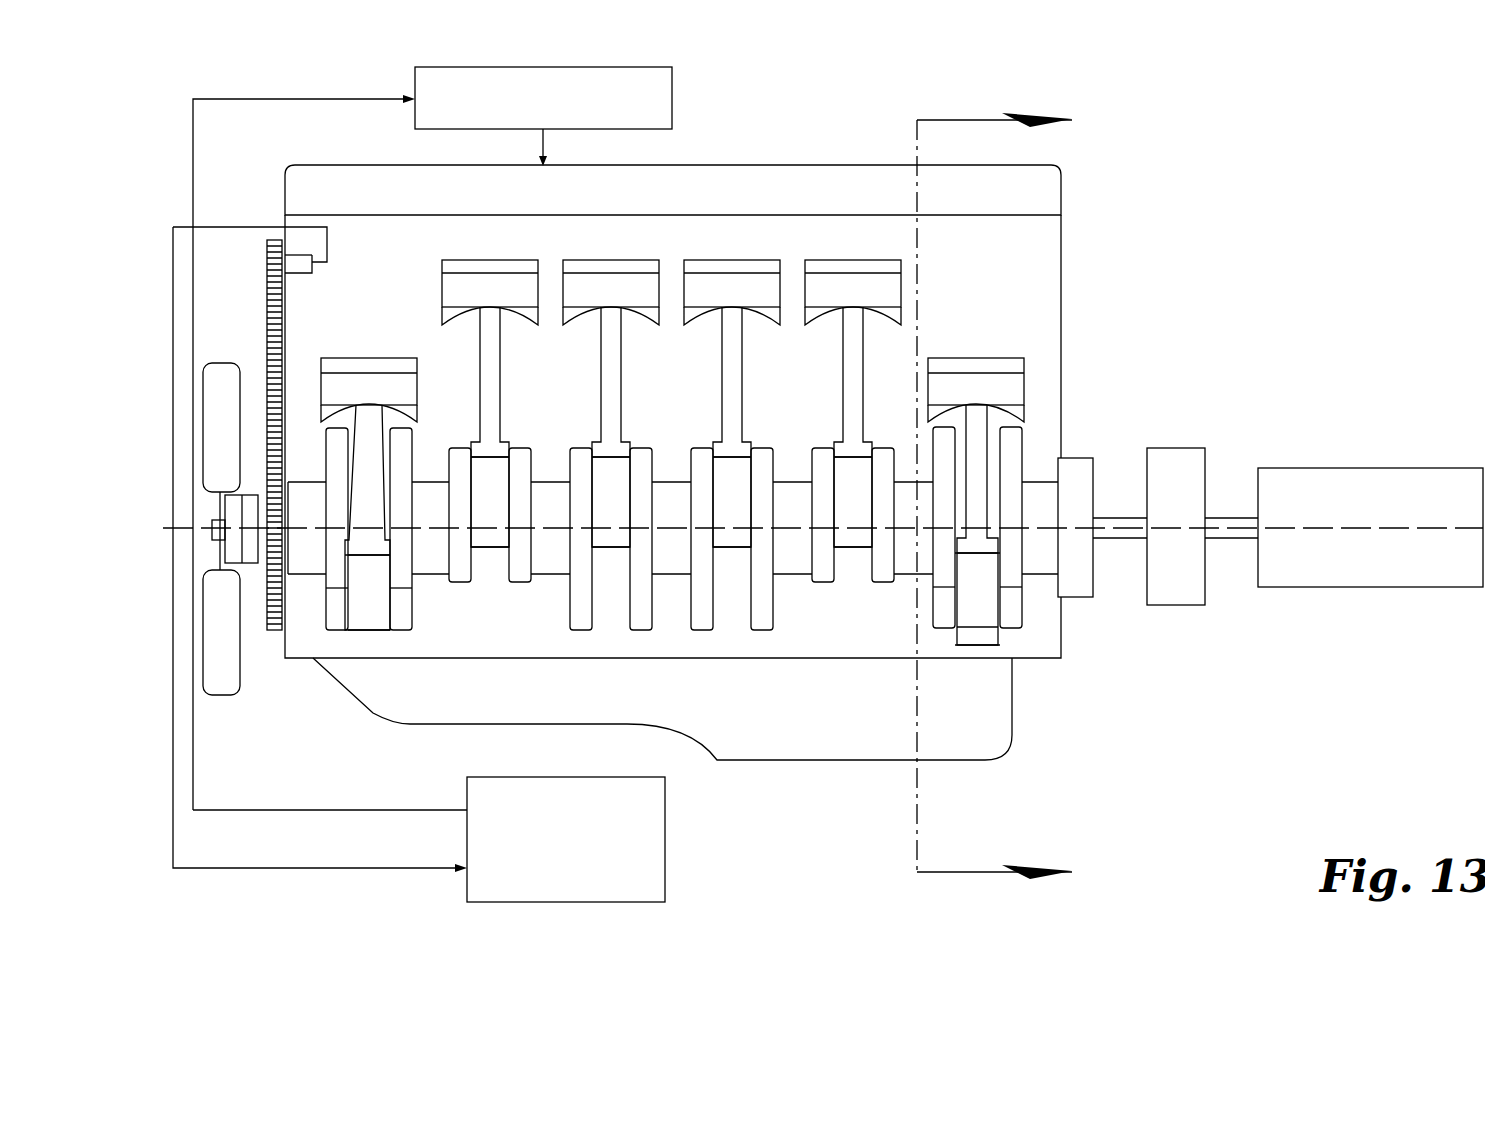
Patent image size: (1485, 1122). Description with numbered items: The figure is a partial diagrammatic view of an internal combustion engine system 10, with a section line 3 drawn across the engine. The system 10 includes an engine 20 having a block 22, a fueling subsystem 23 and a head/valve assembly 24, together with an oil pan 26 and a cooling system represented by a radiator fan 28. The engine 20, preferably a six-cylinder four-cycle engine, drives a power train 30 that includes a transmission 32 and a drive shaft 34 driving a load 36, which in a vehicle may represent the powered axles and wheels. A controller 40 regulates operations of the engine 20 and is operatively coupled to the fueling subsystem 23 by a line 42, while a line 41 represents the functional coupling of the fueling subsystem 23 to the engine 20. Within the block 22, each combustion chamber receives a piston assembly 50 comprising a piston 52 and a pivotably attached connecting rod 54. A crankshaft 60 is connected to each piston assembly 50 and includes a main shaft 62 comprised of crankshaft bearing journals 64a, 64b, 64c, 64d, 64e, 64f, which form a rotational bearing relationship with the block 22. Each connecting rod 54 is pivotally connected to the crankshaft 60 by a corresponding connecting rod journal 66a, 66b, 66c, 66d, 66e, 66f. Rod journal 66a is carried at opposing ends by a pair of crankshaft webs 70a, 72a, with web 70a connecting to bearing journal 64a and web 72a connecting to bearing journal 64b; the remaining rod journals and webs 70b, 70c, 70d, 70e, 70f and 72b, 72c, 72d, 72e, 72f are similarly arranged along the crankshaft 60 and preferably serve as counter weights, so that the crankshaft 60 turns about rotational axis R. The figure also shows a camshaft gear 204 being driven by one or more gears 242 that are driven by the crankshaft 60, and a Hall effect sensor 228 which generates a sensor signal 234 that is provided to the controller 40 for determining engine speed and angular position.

The internal combustion engine system 10 is at (1328, 266).
The section line 3- 3 is at (1010, 496).
The engine 20 is at (278, 165).
The block 22 is at (285, 226).
The fueling subsystem 23 is at (530, 122).
The head/valve assembly 24 is at (820, 200).
The oil pan 26 is at (450, 726).
The radiator fan 28 is at (240, 692).
The power train 30 is at (1118, 548).
The transmission 32 is at (1184, 448).
The drive shaft 34 is at (1238, 517).
The load 36 is at (1360, 560).
The controller 40 is at (554, 869).
The line 41 is at (547, 138).
The line 42 is at (193, 787).
The piston assembly 50 is at (320, 362).
The piston 52 is at (357, 400).
The connecting rod 54 is at (392, 426).
The crankshaft 60 is at (300, 616).
The main shaft 62 is at (1062, 638).
The crankshaft bearing journal 64a is at (1045, 478).
The crankshaft bearing journal 64b is at (914, 576).
The crankshaft bearing journal 64c is at (793, 576).
The crankshaft bearing journal 64d is at (674, 576).
The crankshaft bearing journal 64e is at (552, 576).
The crankshaft bearing journal 64f is at (430, 576).
The connecting rod journal 66a is at (995, 647).
The connecting rod journal 66b is at (848, 550).
The connecting rod journal 66c is at (727, 550).
The connecting rod journal 66d is at (608, 550).
The connecting rod journal 66e is at (486, 550).
The connecting rod journal 66f is at (380, 632).
The crankshaft web 70a is at (1018, 630).
The crankshaft web 70b is at (880, 582).
The crankshaft web 70c is at (770, 632).
The crankshaft web 70d is at (648, 632).
The crankshaft web 70e is at (525, 585).
The crankshaft web 70f is at (410, 632).
The crankshaft web 72a is at (952, 430).
The crankshaft web 72b is at (820, 446).
The crankshaft web 72c is at (702, 440).
The crankshaft web 72d is at (580, 446).
The crankshaft web 72e is at (460, 440).
The crankshaft web 72f is at (333, 458).
The camshaft gear 204 is at (267, 313).
The Hall effect sensor 228 is at (308, 278).
The sensor signal 234 is at (340, 866).
The gears 242 is at (268, 605).
The rotational axis R is at (247, 527).